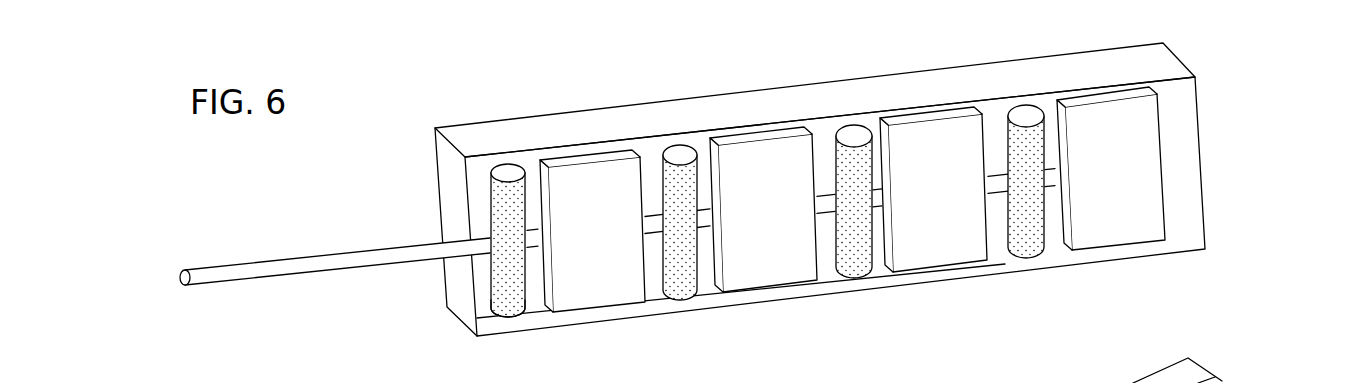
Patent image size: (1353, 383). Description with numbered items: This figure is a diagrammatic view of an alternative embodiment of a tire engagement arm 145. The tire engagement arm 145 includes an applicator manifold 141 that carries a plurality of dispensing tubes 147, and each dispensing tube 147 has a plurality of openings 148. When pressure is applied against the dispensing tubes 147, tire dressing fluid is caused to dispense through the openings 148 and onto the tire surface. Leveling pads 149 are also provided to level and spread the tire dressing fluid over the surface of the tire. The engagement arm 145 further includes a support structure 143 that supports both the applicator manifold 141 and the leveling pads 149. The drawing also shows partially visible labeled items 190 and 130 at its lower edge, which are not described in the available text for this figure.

The applicator manifold 141 is at (482, 242).
The support structure 143 is at (610, 128).
The tire engagement arm 145 is at (758, 213).
The dispensing tube 147 is at (515, 312).
The opening 148 is at (503, 295).
The leveling pad 149 is at (578, 260).
The adjacent component (partially shown) 190 is at (1110, 370).
The component (partially shown) 130 is at (637, 380).